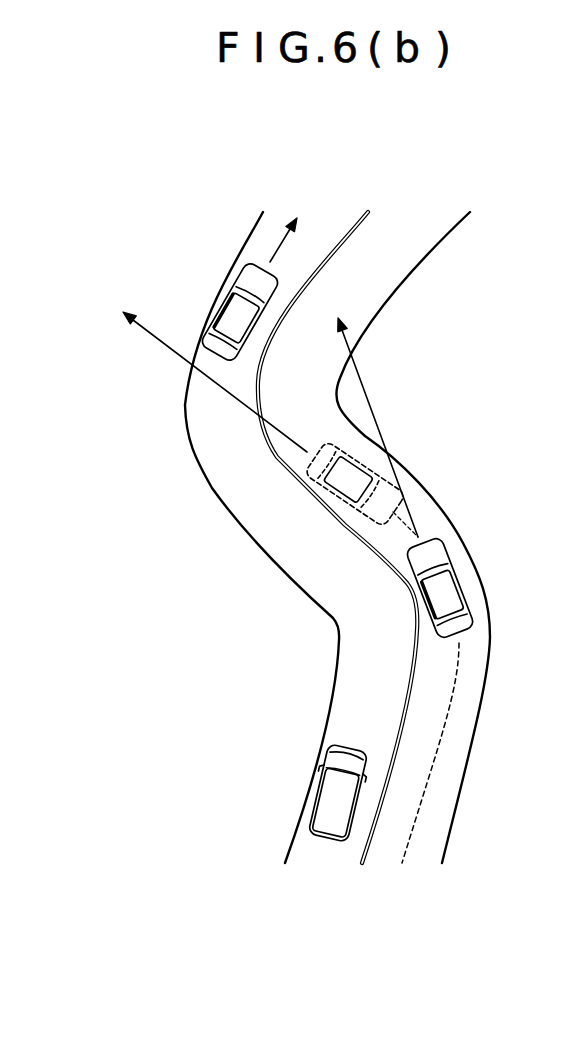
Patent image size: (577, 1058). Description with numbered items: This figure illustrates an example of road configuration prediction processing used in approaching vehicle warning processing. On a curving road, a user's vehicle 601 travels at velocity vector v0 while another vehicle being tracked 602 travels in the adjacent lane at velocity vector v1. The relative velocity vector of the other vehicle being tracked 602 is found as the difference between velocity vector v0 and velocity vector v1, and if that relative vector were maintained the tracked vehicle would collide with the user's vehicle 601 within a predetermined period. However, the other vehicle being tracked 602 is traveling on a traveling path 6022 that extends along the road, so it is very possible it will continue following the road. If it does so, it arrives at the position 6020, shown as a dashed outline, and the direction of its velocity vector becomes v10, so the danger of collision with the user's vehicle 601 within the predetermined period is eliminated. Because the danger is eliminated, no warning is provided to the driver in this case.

The user's vehicle 601 is at (217, 312).
The other vehicle being tracked 602 is at (469, 582).
The position 6020 is at (352, 500).
The traveling path 6022 is at (459, 670).
The velocity vector v0 is at (299, 229).
The velocity vector v1 is at (378, 411).
The velocity vector direction v10 is at (197, 382).